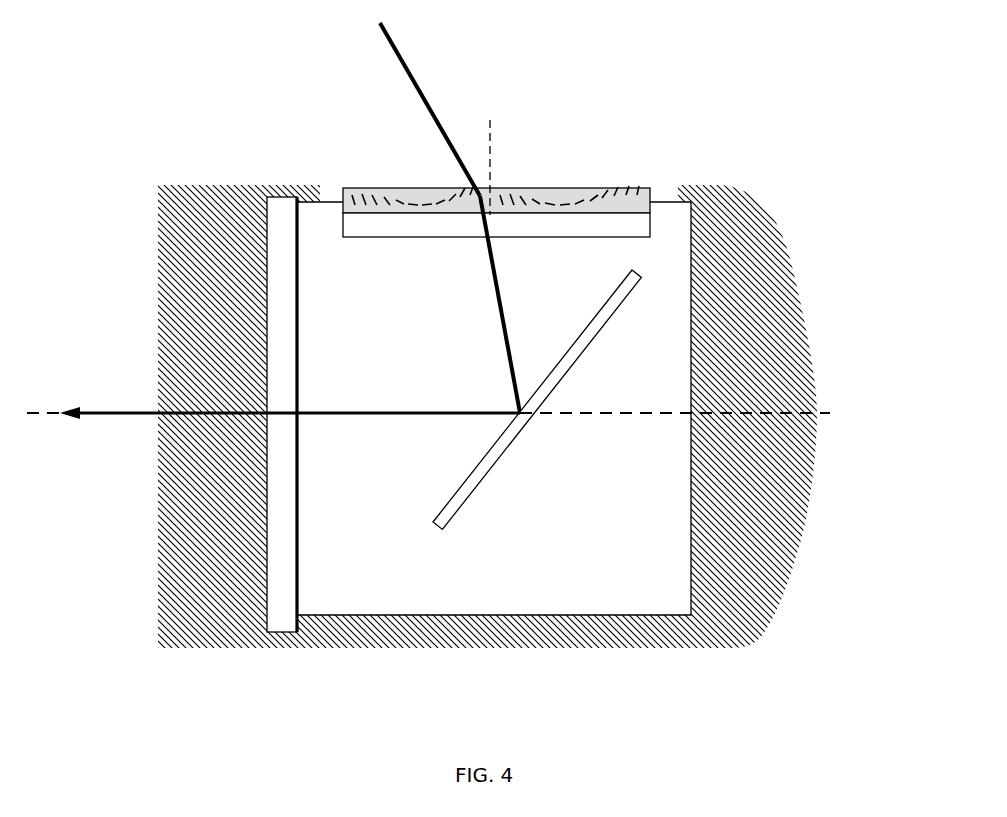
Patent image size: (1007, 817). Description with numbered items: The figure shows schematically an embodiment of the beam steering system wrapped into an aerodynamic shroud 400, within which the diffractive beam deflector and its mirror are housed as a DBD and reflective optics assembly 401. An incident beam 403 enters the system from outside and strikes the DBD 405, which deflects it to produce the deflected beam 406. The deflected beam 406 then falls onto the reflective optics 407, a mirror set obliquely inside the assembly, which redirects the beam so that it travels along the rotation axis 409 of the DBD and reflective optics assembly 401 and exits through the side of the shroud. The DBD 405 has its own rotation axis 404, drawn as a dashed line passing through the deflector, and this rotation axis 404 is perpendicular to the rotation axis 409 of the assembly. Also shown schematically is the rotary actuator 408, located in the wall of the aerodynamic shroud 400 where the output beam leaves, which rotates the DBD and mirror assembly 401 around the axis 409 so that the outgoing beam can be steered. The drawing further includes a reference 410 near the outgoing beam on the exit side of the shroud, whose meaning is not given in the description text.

The aerodynamic shroud 400 is at (780, 475).
The DBD and reflective optics assembly 401 is at (658, 569).
The incident beam 403 is at (403, 60).
The rotation axis of the DBD 404 is at (494, 152).
The DBD 405 is at (545, 190).
The deflected beam 406 is at (500, 337).
The reflective optics 407 is at (615, 305).
The rotary actuator 408 is at (293, 197).
The rotation axis of the DBD and reflective optics assembly 409 is at (38, 411).
The output optical axis 410 is at (98, 422).